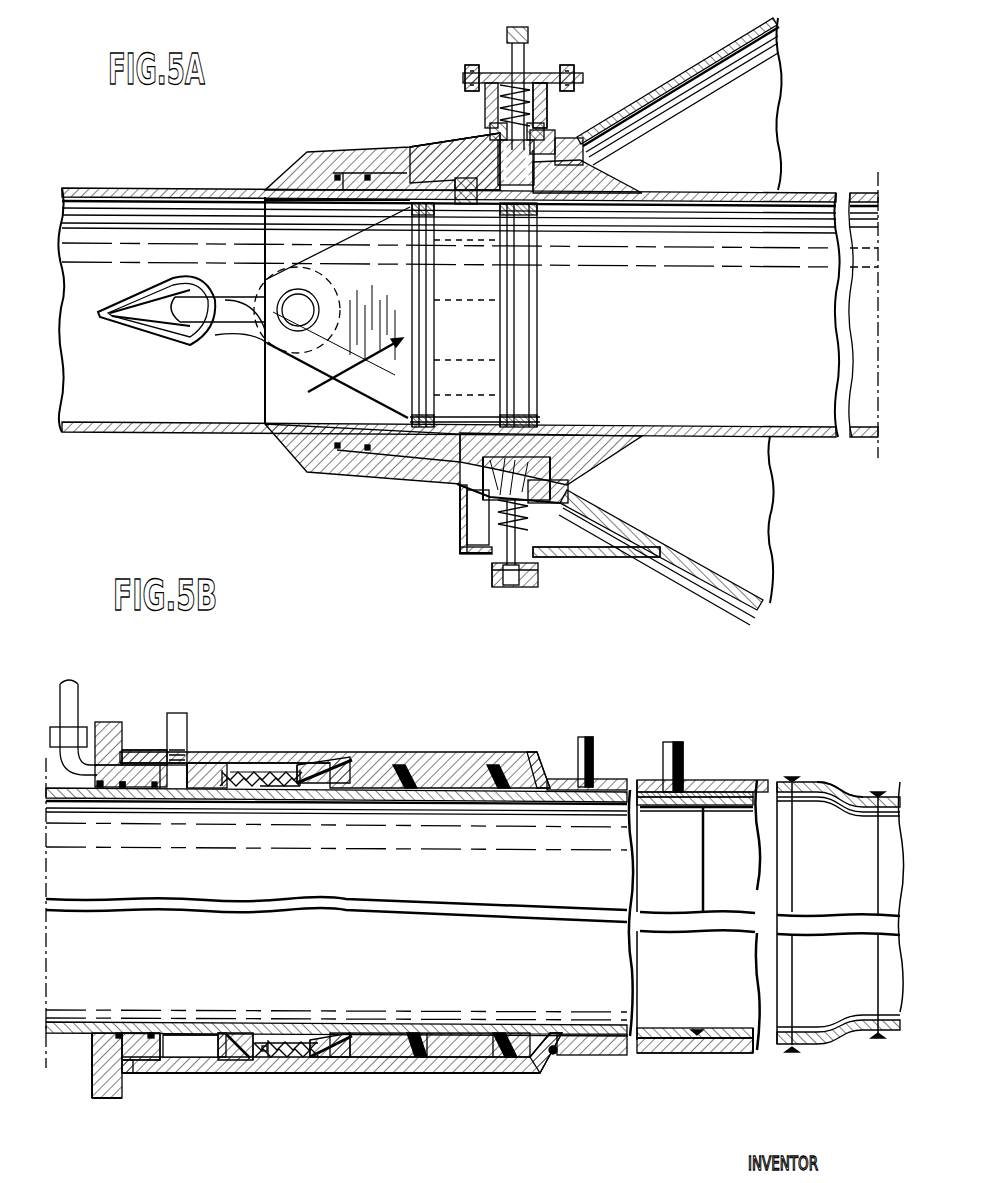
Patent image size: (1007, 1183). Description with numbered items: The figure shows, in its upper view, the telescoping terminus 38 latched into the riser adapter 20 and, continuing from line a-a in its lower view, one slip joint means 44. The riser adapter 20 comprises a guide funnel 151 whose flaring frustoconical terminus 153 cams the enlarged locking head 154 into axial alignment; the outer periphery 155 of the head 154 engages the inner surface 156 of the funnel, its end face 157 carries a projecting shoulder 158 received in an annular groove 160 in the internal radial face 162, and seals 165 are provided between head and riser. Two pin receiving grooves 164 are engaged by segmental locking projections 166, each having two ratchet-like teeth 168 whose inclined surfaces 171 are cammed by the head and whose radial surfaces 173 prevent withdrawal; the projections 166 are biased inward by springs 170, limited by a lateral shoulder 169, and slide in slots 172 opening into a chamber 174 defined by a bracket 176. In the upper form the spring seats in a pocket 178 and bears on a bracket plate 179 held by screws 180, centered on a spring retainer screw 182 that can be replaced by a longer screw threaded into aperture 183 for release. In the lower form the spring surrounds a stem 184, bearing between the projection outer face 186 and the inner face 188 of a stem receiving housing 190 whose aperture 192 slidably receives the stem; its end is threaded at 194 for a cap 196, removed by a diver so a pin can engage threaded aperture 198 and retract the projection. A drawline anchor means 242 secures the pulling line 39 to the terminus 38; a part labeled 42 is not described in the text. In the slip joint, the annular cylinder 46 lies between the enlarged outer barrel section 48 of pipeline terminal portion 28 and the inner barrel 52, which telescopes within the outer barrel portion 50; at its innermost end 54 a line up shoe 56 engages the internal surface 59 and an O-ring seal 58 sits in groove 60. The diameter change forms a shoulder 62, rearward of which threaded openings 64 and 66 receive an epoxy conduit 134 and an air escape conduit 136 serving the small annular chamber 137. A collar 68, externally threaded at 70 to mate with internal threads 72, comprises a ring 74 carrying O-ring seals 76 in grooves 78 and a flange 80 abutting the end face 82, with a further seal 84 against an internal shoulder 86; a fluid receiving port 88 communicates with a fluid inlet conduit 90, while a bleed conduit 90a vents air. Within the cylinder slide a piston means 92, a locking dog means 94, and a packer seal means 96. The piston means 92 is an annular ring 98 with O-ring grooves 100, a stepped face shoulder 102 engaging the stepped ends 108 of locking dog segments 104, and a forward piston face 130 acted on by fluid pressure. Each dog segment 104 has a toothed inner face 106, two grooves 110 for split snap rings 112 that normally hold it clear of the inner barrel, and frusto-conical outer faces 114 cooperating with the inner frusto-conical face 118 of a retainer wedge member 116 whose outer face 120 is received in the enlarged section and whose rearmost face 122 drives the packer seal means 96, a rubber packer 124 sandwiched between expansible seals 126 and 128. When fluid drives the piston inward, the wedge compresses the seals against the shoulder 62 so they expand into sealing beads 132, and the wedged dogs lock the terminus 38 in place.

In FIG. 5A, the riser adapter 20 is at (380, 105).
In FIG. 5B, the pipeline terminal portion 28 is at (548, 776).
In FIG. 5A, the telescoping terminus 38 is at (683, 192).
In FIG. 5B, the telescoping terminus 38 is at (57, 783).
In FIG. 5A, the pulling line 39 is at (99, 321).
In FIG. 5A, the pivot arm 42 is at (311, 310).
In FIG. 5B, the slip joint means 44 is at (275, 752).
In FIG. 5B, the annular chamber or cylinder 46 is at (200, 770).
In FIG. 5B, the enlarged outer barrel end section 48 is at (340, 758).
In FIG. 5B, the outer barrel portion 50 is at (760, 785).
In FIG. 5B, the inner pipeline barrel 52 is at (290, 788).
In FIG. 5B, the longitudinally innermost end of the inner barrel 54 is at (705, 825).
In FIG. 5B, the line up shoe 56 is at (737, 1053).
In FIG. 5B, the O-ring seal 58 is at (680, 1052).
In FIG. 5B, the internal surface of the outer barrel 59 is at (755, 1053).
In FIG. 5B, the external annular groove 60 is at (705, 1053).
In FIG. 5B, the shoulder 62 is at (540, 765).
In FIG. 5B, the threaded opening 64 is at (600, 782).
In FIG. 5B, the threaded opening 66 is at (690, 782).
In FIG. 5B, the collar 68 is at (92, 1084).
In FIG. 5B, the external threads 70 is at (172, 1060).
In FIG. 5B, the internal threads 72 is at (150, 750).
In FIG. 5B, the externally threaded ring 74 is at (142, 1060).
In FIG. 5B, the O-ring seals 76 is at (110, 788).
In FIG. 5B, the internal annular grooves 78 is at (128, 784).
In FIG. 5B, the annular flange portion 80 is at (100, 1095).
In FIG. 5B, the annular end face 82 is at (110, 730).
In FIG. 5B, the seal 84 is at (100, 1070).
In FIG. 5B, the internal shoulder 86 is at (135, 752).
In FIG. 5B, the fluid receiving port 88 is at (158, 788).
In FIG. 5B, the fluid inlet conduit 90 is at (78, 690).
In FIG. 5B, the bleed conduit 90a is at (180, 715).
In FIG. 5B, the piston means 92 is at (255, 1057).
In FIG. 5B, the locking dog means 94 is at (315, 1058).
In FIG. 5B, the packer seal means 96 is at (430, 1073).
In FIG. 5B, the annular ring 98 is at (220, 1057).
In FIG. 5B, the external and internal grooves 100 is at (205, 780).
In FIG. 5B, the stepped face shoulder 102 is at (260, 1045).
In FIG. 5B, the locking dog segments 104 is at (300, 788).
In FIG. 5B, the toothed radially inner face 106 is at (240, 788).
In FIG. 5B, the outer longitudinally facing ends 108 is at (270, 1050).
In FIG. 5B, the radially inwardly facing grooves 110 is at (262, 771).
In FIG. 5B, the split snap rings 112 is at (235, 771).
In FIG. 5B, the frusto-conical outer faces 114 is at (370, 1040).
In FIG. 5B, the retainer wedge member 116 is at (400, 772).
In FIG. 5B, the radially inner frusto-conical face 118 is at (345, 1058).
In FIG. 5B, the radially outer face of the wedge 120 is at (370, 773).
In FIG. 5B, the longitudinally rearmost face of the wedge 122 is at (440, 1040).
In FIG. 5B, the rubber packer 124 is at (495, 1057).
In FIG. 5B, the seal 126 is at (410, 1057).
In FIG. 5B, the seal 128 is at (540, 1065).
In FIG. 5B, the forward piston face 130 is at (210, 1035).
In FIG. 5B, the seal beads 132 is at (415, 1040).
In FIG. 5B, the epoxy conduit 134 is at (585, 740).
In FIG. 5B, the air escape conduit 136 is at (668, 744).
In FIG. 5B, the small annular chamber 137 is at (600, 1035).
In FIG. 5A, the guide funnel 151 is at (405, 150).
In FIG. 5A, the frustoconical terminus 153 is at (702, 64).
In FIG. 5A, the locking head 154 is at (630, 182).
In FIG. 5A, the outer periphery of the locking head 155 is at (400, 215).
In FIG. 5A, the inner surface of the guide funnel 156 is at (370, 175).
In FIG. 5A, the end face of the locking head 157 is at (337, 204).
In FIG. 5A, the longitudinally projecting shoulder 158 is at (343, 470).
In FIG. 5A, the annular groove 160 is at (307, 180).
In FIG. 5A, the internal radially extending annular face 162 is at (337, 440).
In FIG. 5A, the pin receiving grooves 164 is at (530, 300).
In FIG. 5A, the seals 165 is at (366, 442).
In FIG. 5A, the locking projections 166 is at (568, 135).
In FIG. 5A, the ratchet-like teeth 168 is at (466, 186).
In FIG. 5A, the lateral shoulder 169 is at (490, 124).
In FIG. 5A, the springs 170 is at (520, 90).
In FIG. 5A, the inclined surfaces of the teeth 171 is at (510, 176).
In FIG. 5A, the slot 172 is at (472, 166).
In FIG. 5A, the radially extending surfaces of the teeth 173 is at (500, 461).
In FIG. 5A, the chamber 174 is at (490, 104).
In FIG. 5A, the bracket 176 is at (490, 50).
In FIG. 5A, the spring receiving pocket 178 is at (542, 118).
In FIG. 5A, the bracket plate 179 is at (564, 75).
In FIG. 5A, the screws 180 is at (467, 75).
In FIG. 5A, the spring retainer screw 182 is at (527, 30).
In FIG. 5A, the central threaded aperture 183 is at (553, 180).
In FIG. 5A, the stem 184 is at (496, 555).
In FIG. 5A, the projection outer face 186 is at (548, 505).
In FIG. 5A, the inner face of the stem receiving housing 188 is at (522, 542).
In FIG. 5A, the stem receiving housing 190 is at (535, 580).
In FIG. 5A, the housing aperture 192 is at (508, 584).
In FIG. 5A, the threaded end 194 is at (492, 576).
In FIG. 5A, the threaded cap 196 is at (515, 587).
In FIG. 5A, the threaded aperture 198 is at (540, 565).
In FIG. 5A, the drawline anchor means 242 is at (242, 283).